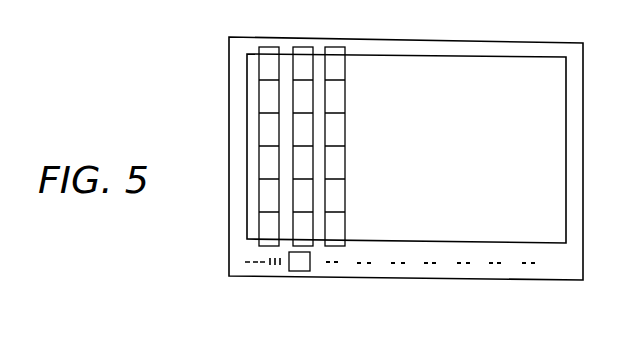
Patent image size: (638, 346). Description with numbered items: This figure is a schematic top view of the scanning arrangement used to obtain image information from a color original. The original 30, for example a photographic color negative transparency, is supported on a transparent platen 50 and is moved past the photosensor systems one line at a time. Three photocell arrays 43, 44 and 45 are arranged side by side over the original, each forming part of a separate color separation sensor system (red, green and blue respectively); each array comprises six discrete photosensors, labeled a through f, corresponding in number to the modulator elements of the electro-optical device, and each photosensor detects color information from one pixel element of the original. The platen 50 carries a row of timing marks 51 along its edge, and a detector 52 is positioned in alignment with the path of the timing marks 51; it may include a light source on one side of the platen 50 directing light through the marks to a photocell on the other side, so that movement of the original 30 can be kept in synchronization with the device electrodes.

The original 30 is at (463, 157).
The photocell array 43 is at (275, 46).
The photocell array 44 is at (308, 51).
The photocell array 45 is at (343, 51).
The transparent platen 50 is at (478, 270).
The timing marks 51 is at (372, 267).
The detector 52 is at (300, 271).